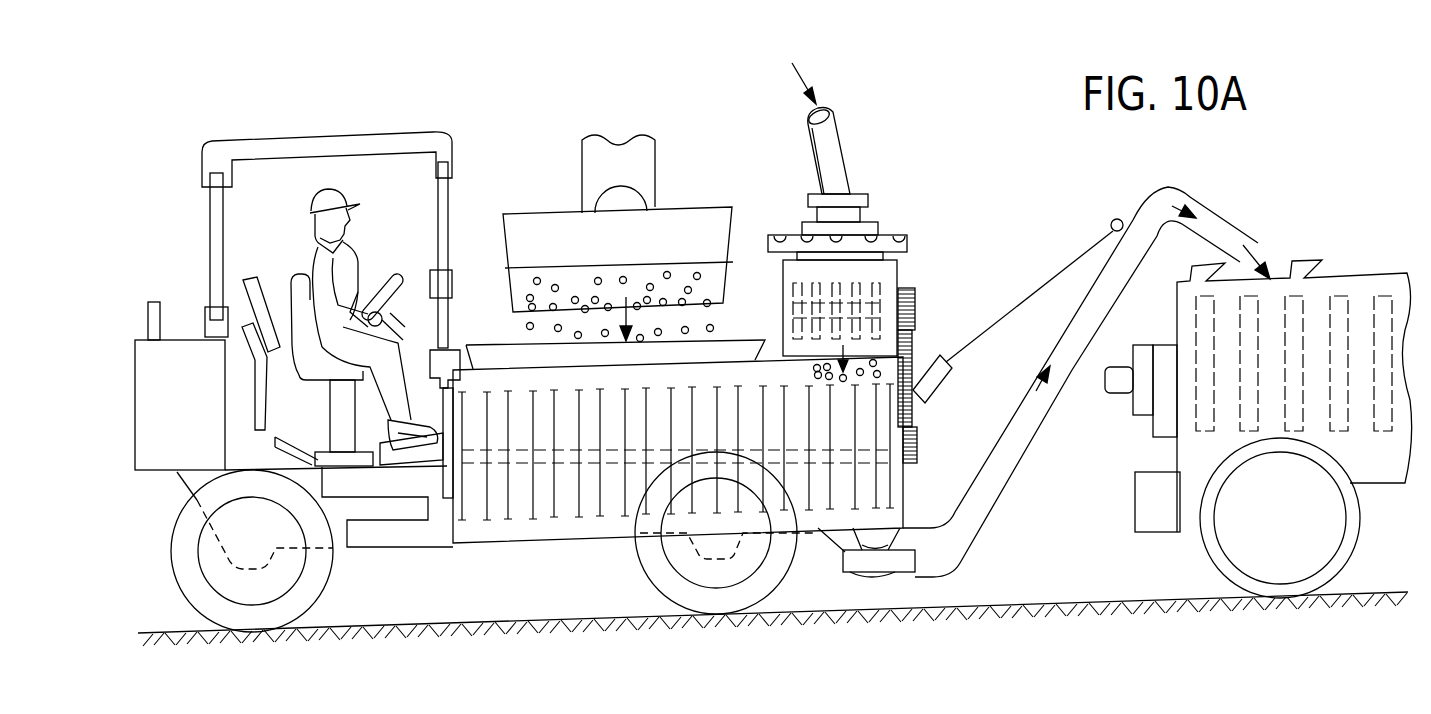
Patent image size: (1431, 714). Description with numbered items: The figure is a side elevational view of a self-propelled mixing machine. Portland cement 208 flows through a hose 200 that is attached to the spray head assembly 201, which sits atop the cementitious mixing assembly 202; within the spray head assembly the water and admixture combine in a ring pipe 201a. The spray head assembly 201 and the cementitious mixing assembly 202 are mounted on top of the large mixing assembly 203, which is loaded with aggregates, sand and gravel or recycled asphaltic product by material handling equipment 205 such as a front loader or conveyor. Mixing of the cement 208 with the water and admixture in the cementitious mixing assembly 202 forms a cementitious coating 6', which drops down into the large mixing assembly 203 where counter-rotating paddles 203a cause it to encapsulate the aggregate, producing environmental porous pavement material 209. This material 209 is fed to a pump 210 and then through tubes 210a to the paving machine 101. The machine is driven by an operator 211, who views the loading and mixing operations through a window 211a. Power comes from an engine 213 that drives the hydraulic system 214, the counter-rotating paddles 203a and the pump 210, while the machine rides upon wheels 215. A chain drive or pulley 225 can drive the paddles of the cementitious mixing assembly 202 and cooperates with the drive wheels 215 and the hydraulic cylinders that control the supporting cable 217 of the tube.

The paving machine 101 is at (1355, 270).
The hose 200 is at (850, 147).
The spray head assembly 201 is at (877, 222).
The ring pipe 201a is at (808, 194).
The cementitious mixing assembly 202 is at (900, 268).
The large mixing assembly 203 is at (541, 527).
The counter-rotating paddles 203a is at (588, 525).
The material handling equipment 205 is at (553, 237).
The cement 208 is at (792, 63).
The environmental porous pavement material 209 is at (1036, 391).
The pump 210 is at (902, 580).
The tubes 210a is at (980, 517).
The operator 211 is at (348, 248).
The window 211a is at (208, 230).
The engine 213 is at (133, 382).
The hydraulic system 214 is at (178, 477).
The wheels 215 is at (177, 583).
The supporting cable 217 is at (1073, 262).
The chain drive or pulley 225 is at (917, 355).
The cementitious coating 6' is at (849, 360).